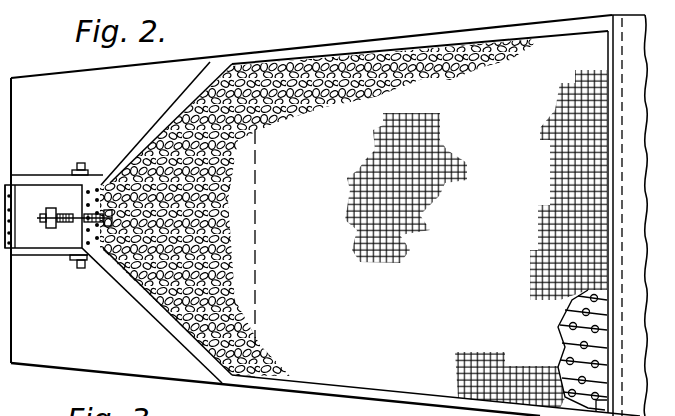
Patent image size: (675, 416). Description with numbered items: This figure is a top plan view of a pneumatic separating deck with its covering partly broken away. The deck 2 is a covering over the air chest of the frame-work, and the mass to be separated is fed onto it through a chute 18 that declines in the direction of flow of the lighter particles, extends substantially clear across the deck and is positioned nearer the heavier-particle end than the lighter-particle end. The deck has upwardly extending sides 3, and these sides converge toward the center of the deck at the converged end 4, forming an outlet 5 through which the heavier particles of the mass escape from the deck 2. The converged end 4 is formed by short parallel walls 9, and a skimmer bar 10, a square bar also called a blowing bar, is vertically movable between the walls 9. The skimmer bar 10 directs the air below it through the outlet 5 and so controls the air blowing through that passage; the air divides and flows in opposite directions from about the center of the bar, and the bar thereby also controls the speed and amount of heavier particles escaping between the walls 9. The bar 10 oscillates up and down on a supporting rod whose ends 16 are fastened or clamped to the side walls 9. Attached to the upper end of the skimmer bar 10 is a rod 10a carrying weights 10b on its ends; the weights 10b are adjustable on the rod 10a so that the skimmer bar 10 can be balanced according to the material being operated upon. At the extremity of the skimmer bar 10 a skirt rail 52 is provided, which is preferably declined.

The deck 2 is at (329, 215).
The sides 3 is at (310, 55).
The converged end 4 is at (163, 114).
The outlet 5 is at (147, 135).
The short parallel walls 9 is at (42, 181).
The skimmer bar 10 is at (23, 190).
The rod 10a is at (67, 226).
The weights 10b is at (55, 209).
The ends of rod 16 is at (85, 170).
The chute 18 is at (249, 182).
The skirt rail 52 is at (13, 249).